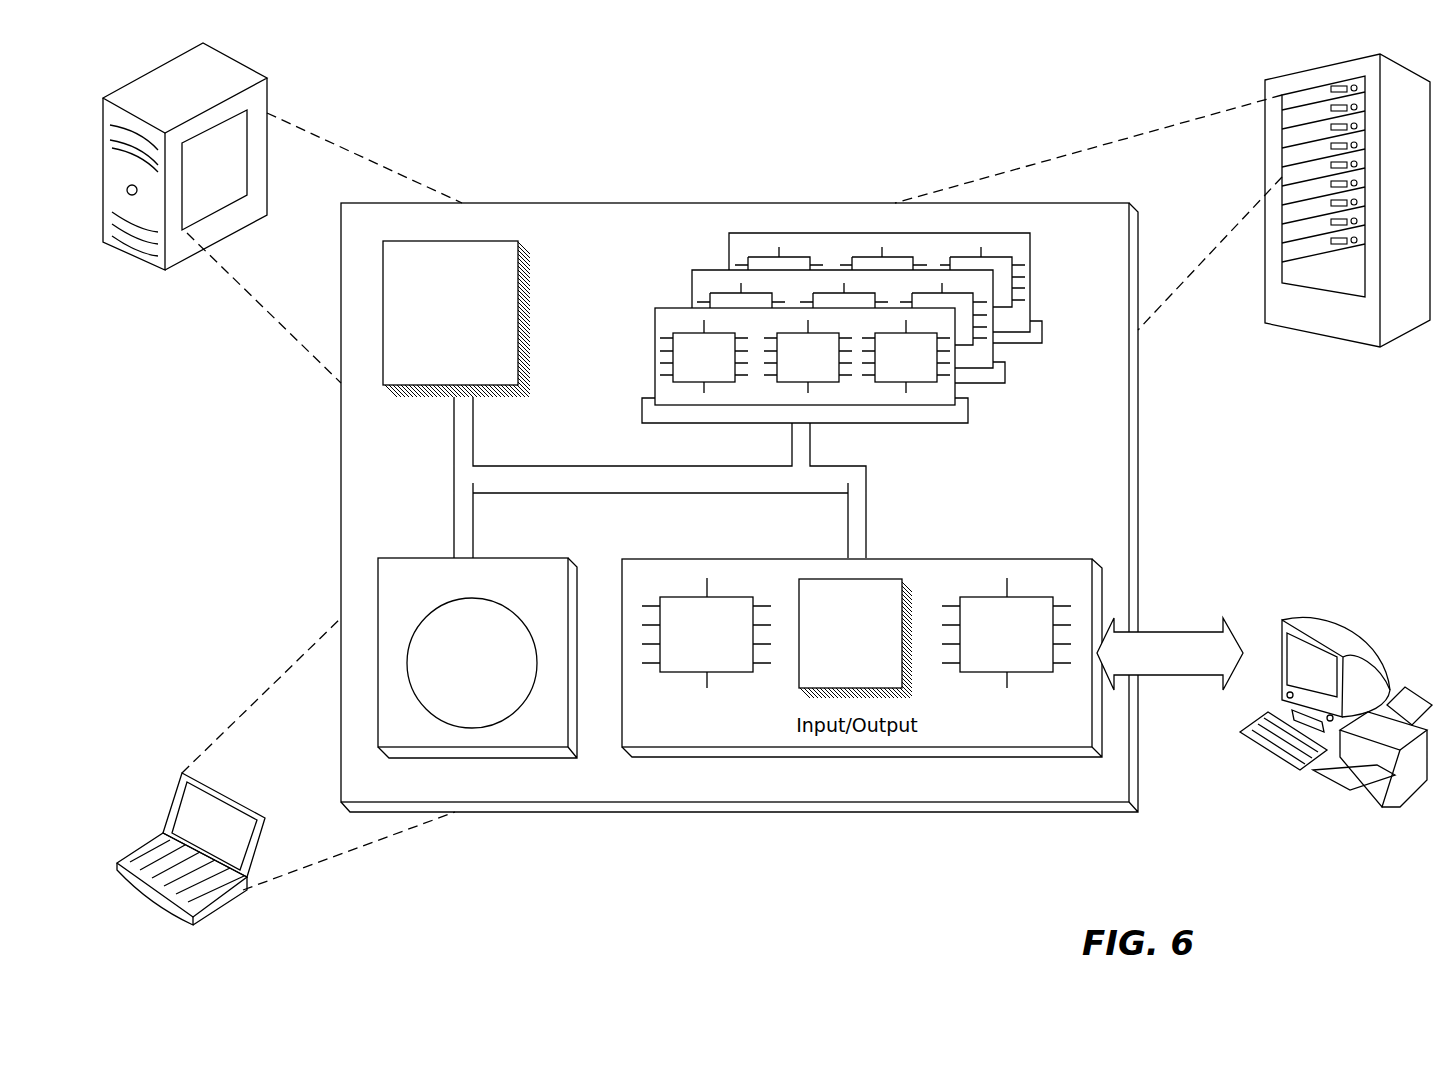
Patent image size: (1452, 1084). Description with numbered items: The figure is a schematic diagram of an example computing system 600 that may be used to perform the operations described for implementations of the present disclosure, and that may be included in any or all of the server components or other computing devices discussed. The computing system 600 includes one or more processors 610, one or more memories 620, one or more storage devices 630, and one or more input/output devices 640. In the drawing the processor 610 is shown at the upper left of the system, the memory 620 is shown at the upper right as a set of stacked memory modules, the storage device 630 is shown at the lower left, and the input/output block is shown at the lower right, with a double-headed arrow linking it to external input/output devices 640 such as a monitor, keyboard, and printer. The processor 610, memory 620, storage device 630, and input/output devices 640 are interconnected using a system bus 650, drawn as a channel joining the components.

The computing system 600 is at (548, 118).
The processor 610 is at (456, 319).
The memory 620 is at (1037, 384).
The storage device 630 is at (477, 658).
The input/output (I/O) device 640 is at (1282, 626).
The system bus 650 is at (655, 484).